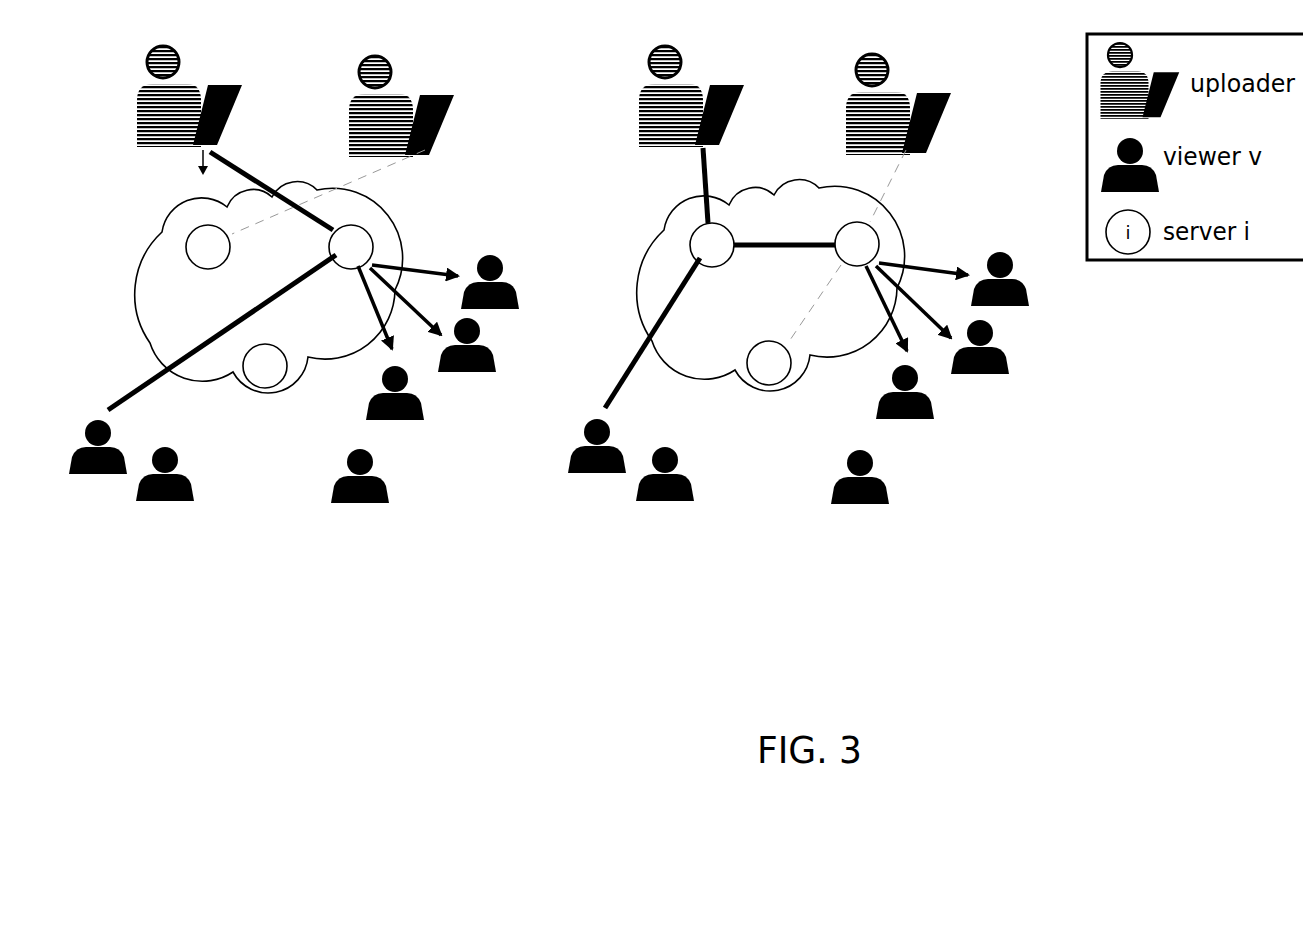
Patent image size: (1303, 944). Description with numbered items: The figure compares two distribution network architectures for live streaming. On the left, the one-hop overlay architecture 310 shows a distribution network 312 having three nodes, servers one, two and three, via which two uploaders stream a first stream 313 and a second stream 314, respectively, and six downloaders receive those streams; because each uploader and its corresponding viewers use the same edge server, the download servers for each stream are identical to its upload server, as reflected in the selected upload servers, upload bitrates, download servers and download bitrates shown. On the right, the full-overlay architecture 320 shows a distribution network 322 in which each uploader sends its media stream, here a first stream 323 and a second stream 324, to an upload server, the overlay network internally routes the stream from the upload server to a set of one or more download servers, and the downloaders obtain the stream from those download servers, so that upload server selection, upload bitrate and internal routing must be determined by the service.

The one-hop overlay architecture 310 is at (311, 314).
The distribution network 312 is at (269, 287).
The first stream 313 is at (226, 166).
The second stream 314 is at (320, 168).
The full-overlay architecture 320 is at (817, 314).
The distribution network 322 is at (771, 285).
The first stream 323 is at (709, 165).
The second stream 324 is at (866, 182).